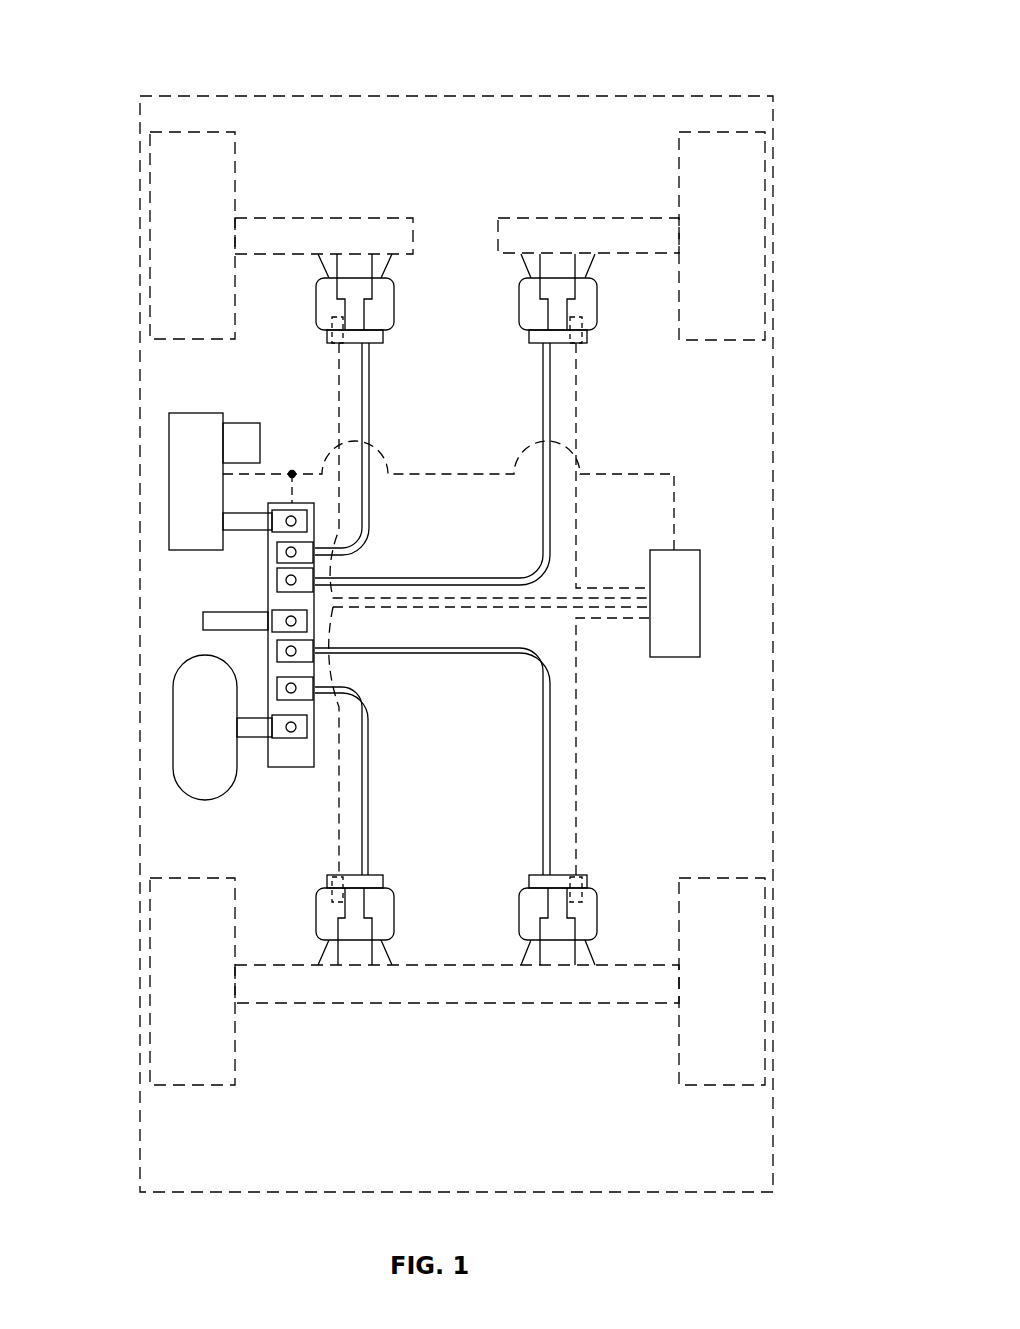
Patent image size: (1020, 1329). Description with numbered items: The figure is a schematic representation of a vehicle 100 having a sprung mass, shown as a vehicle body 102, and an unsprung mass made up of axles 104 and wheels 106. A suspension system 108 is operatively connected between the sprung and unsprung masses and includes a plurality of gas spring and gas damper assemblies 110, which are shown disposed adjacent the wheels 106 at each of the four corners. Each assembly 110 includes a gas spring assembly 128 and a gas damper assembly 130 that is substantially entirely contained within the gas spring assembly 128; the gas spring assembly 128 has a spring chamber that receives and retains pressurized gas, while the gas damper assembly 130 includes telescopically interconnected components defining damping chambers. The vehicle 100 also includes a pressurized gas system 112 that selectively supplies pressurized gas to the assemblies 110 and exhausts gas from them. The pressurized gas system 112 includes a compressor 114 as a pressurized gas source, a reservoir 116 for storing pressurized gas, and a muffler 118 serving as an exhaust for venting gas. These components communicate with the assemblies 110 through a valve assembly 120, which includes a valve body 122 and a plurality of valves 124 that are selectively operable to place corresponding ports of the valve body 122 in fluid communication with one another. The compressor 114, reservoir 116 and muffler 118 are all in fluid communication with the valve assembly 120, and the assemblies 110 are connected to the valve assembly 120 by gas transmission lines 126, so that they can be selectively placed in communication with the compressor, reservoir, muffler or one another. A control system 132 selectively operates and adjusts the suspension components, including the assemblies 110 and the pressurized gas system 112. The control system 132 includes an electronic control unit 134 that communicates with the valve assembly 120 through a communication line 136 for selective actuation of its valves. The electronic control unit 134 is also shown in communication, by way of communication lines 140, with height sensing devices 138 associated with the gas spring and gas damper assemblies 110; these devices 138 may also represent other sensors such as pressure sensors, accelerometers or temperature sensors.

The vehicle 100 is at (803, 110).
The vehicle body 102 is at (622, 96).
The axles 104 is at (308, 225).
The wheels 106 is at (165, 183).
The suspension system 108 is at (742, 390).
The gas spring and gas damper assemblies 110 is at (400, 350).
The pressurized gas system 112 is at (145, 588).
The compressor 114 is at (182, 480).
The reservoir 116 is at (182, 722).
The muffler 118 is at (210, 622).
The valve assembly 120 is at (270, 790).
The valve body 122 is at (287, 767).
The valves 124 is at (283, 580).
The gas transmission lines 126 is at (364, 522).
The gas spring assembly 128 is at (395, 296).
The gas damper assembly 130 is at (333, 298).
The control system 132 is at (742, 500).
The electronic control unit 134 is at (685, 655).
The communication line 136 is at (655, 474).
The height sensing devices 138 is at (335, 345).
The communication lines 140 is at (340, 410).